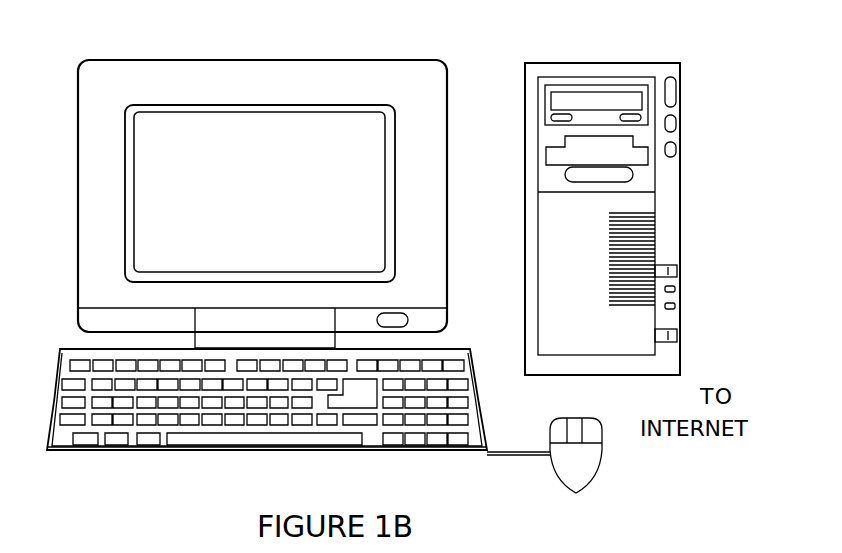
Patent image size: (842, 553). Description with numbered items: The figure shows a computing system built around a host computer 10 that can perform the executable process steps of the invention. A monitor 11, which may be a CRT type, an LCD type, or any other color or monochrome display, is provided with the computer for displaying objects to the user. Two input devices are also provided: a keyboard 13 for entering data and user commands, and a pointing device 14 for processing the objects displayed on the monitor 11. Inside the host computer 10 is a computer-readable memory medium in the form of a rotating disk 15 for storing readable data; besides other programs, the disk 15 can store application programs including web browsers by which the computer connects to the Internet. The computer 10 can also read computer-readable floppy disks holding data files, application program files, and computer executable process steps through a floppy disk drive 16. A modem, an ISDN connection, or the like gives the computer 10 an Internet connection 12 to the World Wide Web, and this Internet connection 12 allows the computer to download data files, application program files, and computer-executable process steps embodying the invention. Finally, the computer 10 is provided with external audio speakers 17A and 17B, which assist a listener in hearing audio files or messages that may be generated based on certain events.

The host computer 10 is at (597, 63).
The monitor 11 is at (137, 60).
The Internet connection 12 is at (675, 336).
The keyboard 13 is at (181, 453).
The pointing device 14 is at (601, 462).
The rotating disk 15 is at (630, 102).
The floppy disk drive 16 is at (628, 156).
The external audio speaker 17A is at (675, 289).
The external audio speaker 17B is at (675, 306).